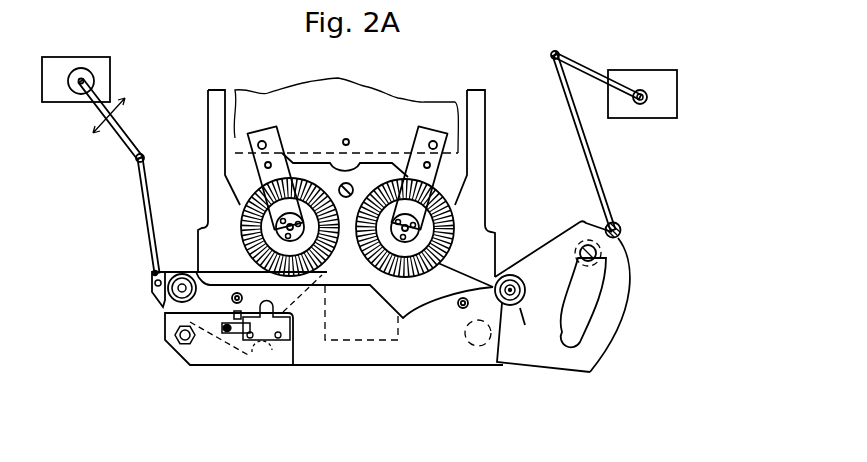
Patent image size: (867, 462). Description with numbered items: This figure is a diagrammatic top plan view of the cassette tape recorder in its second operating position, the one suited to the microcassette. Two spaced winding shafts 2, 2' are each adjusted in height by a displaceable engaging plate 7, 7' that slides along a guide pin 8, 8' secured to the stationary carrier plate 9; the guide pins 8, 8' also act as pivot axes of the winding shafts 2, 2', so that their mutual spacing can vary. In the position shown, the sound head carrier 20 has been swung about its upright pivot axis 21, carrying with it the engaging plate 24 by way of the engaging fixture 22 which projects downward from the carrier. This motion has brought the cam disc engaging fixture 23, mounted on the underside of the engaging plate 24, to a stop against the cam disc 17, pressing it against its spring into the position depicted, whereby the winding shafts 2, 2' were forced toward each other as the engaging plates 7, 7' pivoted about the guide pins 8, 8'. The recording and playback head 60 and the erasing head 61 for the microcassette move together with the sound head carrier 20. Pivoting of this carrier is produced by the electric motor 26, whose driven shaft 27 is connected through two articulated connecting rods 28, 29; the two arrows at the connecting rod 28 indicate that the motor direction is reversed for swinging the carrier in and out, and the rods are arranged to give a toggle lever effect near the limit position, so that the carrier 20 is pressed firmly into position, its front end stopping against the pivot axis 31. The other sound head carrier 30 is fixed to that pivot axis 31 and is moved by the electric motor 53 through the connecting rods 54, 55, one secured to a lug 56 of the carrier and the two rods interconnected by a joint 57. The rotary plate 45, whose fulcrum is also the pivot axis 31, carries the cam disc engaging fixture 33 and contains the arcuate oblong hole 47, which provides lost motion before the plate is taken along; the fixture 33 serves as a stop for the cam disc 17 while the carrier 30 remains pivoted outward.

The winding shaft 2 is at (253, 227).
The winding shaft 2' is at (452, 218).
The engaging plate 7 is at (235, 177).
The engaging plate 7' is at (469, 177).
The guide pin 8 is at (217, 118).
The guide pin 8' is at (484, 120).
The carrier plate 9 is at (417, 113).
The cam disc 17 is at (380, 328).
The sound head carrier 20 is at (353, 352).
The pivot axis 21 is at (182, 302).
The engaging fixture 22 is at (252, 366).
The cam disc engaging fixture 23 is at (300, 286).
The engaging plate 24 is at (160, 293).
The electric motor 26 is at (72, 97).
The crank disc 27 is at (78, 72).
The connecting rod 28 is at (122, 140).
The connecting rod 29 is at (150, 232).
The sound head carrier 30 is at (540, 293).
The pivot axis 31 is at (510, 305).
The cam disc engaging fixture 33 is at (477, 348).
The rotary plate 45 is at (602, 342).
The arcuate oblong hole 47 is at (573, 347).
The electric motor 53 is at (660, 80).
The connecting rod 54 is at (588, 63).
The connecting rod 55 is at (607, 197).
The lug 56 is at (622, 235).
The joint 57 is at (555, 51).
The recording and playback head 60 is at (240, 314).
The erasing head 61 is at (190, 362).